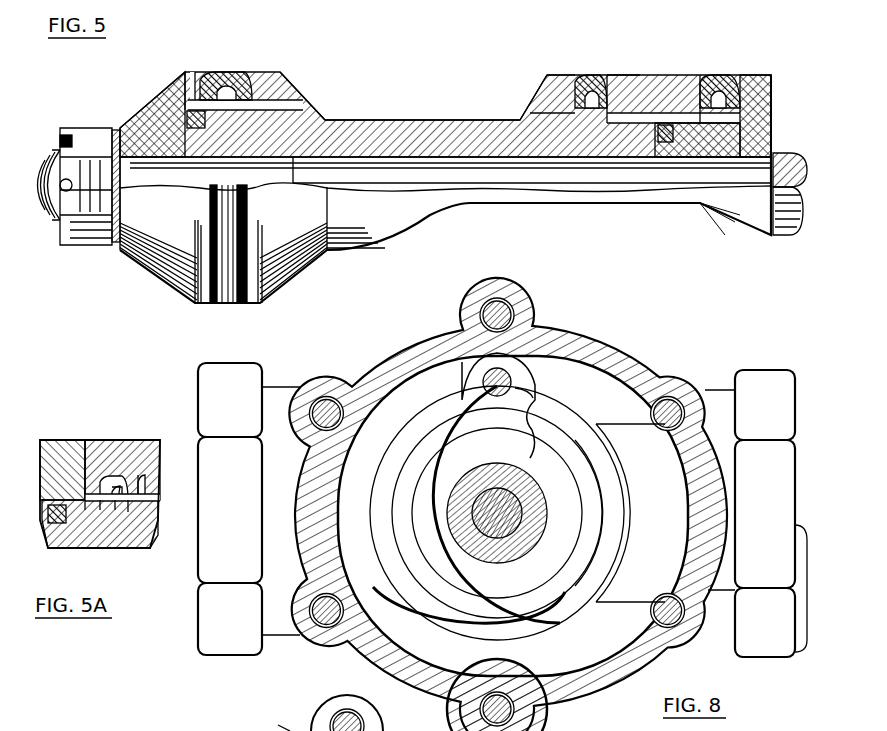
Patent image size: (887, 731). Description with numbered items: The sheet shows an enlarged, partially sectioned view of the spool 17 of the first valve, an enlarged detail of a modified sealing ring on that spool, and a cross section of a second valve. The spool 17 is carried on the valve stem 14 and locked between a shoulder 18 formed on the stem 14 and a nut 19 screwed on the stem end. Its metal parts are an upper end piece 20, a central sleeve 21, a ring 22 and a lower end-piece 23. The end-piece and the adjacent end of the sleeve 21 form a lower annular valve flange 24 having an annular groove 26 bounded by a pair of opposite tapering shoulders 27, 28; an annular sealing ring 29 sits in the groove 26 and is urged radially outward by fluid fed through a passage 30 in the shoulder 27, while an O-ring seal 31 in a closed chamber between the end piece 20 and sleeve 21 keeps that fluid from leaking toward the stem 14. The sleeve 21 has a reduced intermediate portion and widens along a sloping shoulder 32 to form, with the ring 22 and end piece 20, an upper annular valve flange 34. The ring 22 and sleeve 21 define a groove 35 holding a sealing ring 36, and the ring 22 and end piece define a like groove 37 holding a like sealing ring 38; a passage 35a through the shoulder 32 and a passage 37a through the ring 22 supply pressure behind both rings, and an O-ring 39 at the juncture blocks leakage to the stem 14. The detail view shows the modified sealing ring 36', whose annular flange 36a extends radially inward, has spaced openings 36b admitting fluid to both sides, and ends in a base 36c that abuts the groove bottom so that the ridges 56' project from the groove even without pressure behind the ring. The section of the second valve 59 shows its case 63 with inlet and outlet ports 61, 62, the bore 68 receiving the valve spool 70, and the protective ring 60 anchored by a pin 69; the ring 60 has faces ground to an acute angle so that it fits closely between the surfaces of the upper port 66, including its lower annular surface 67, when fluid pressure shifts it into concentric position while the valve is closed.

In FIG. 5, the valve stem 14 is at (48, 160).
In FIG. 5, the spool 17 is at (140, 85).
In FIG. 5, the shoulder 18 is at (772, 157).
In FIG. 5, the nut 19 is at (86, 135).
In FIG. 5, the upper end piece 20 is at (757, 75).
In FIG. 5, the central sleeve 21 is at (428, 122).
In FIG. 5A, the central sleeve 21 is at (158, 442).
In FIG. 5, the ring 22 is at (643, 75).
In FIG. 5, the lower end-piece 23 is at (135, 118).
In FIG. 5A, the lower end-piece 23 is at (72, 440).
In FIG. 5, the lower annular valve flange 24 is at (248, 70).
In FIG. 5A, the lower annular valve flange 24 is at (140, 440).
In FIG. 5, the annular groove 26 is at (198, 100).
In FIG. 5, the tapering shoulder 27 is at (325, 120).
In FIG. 5, the tapering shoulder 28 is at (162, 100).
In FIG. 5, the annular sealing ring 29 is at (228, 72).
In FIG. 5, the passage 30 is at (295, 100).
In FIG. 5A, the passage 30 is at (155, 498).
In FIG. 5, the O-ring seal 31 is at (193, 113).
In FIG. 5A, the O-ring seal 31 is at (50, 520).
In FIG. 5, the sloping shoulder 32 is at (520, 115).
In FIG. 5, the upper annular valve flange 34 is at (625, 75).
In FIG. 5, the groove 35 is at (552, 113).
In FIG. 5, the passage 35a is at (532, 118).
In FIG. 5, the sealing ring 36 is at (583, 63).
In FIG. 5A, the modified sealing ring 36' is at (105, 441).
In FIG. 5A, the annular flange 36a is at (95, 518).
In FIG. 5A, the spaced openings 36b is at (100, 505).
In FIG. 5A, the base 36c is at (110, 502).
In FIG. 5, the groove 37 is at (775, 115).
In FIG. 5, the passage 37a is at (688, 110).
In FIG. 5, the sealing ring 38 is at (736, 75).
In FIG. 5, the O-ring 39 is at (668, 125).
In FIG. 5A, the ridges 56' is at (108, 433).
In FIG. 8, the valve 59 is at (555, 705).
In FIG. 8, the protective ring 60 is at (455, 398).
In FIG. 8, the inlet port 61 is at (197, 540).
In FIG. 8, the outlet port 62 is at (797, 648).
In FIG. 8, the case 63 is at (547, 695).
In FIG. 8, the upper port 66 is at (580, 455).
In FIG. 8, the lower annular surface 67 is at (598, 483).
In FIG. 8, the bore 68 is at (443, 455).
In FIG. 8, the pin 69 is at (545, 385).
In FIG. 8, the valve spool 70 is at (513, 468).